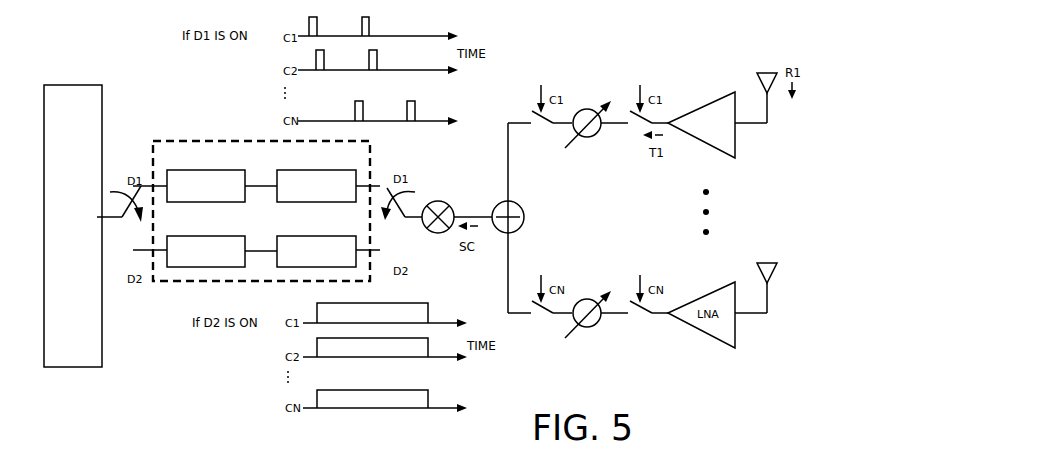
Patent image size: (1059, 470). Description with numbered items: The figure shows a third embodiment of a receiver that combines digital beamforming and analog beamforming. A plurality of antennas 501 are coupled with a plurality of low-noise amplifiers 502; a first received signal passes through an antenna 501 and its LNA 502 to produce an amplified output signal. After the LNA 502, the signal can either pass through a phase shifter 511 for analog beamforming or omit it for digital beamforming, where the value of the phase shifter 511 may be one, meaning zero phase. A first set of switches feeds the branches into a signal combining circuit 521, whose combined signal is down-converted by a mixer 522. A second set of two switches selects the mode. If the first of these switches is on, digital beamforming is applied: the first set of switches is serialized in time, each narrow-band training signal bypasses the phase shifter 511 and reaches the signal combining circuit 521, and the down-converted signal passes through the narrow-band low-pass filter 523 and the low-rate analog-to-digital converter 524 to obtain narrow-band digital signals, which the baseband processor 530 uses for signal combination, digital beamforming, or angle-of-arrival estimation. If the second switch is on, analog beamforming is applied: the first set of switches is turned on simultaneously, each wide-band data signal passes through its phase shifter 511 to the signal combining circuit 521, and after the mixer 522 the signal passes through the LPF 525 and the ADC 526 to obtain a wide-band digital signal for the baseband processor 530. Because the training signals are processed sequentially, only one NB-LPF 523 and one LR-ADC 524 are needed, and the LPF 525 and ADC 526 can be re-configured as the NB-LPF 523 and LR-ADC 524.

The baseband processor 530 is at (62, 344).
The low-rate analog-to-digital converter 524 is at (185, 170).
The narrow-band low-pass filter 523 is at (295, 170).
The ADC 526 is at (185, 236).
The LPF 525 is at (295, 236).
The mixer 522 is at (438, 201).
The signal combining circuit 521 is at (523, 208).
The phase shifter 511 is at (587, 109).
The low-noise amplifier 502 is at (707, 102).
The antenna 501 is at (769, 73).